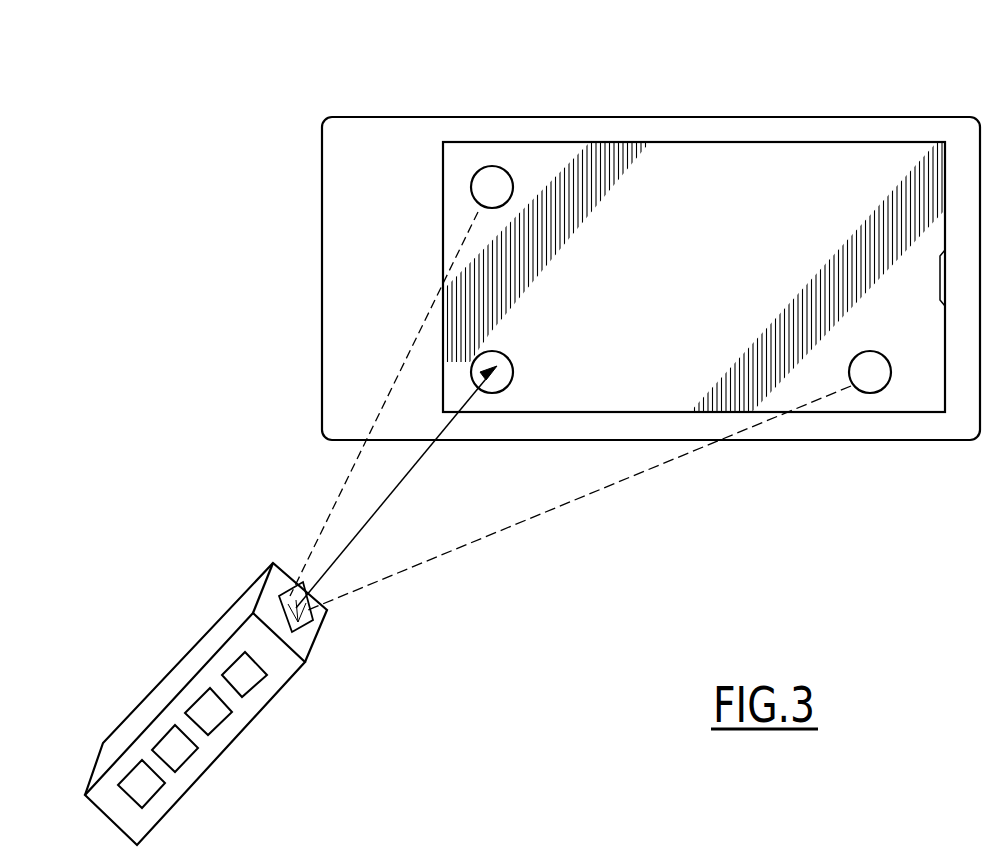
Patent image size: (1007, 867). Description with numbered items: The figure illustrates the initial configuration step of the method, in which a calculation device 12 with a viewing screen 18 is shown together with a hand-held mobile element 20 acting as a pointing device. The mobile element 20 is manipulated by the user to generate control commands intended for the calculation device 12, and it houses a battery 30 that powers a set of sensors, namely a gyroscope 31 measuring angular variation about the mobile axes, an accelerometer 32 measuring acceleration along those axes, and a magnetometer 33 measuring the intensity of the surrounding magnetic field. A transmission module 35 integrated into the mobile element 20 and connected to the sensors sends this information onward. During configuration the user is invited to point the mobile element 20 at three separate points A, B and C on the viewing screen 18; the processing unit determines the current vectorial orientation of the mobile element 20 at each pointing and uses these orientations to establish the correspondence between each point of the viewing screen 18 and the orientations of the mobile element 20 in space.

The calculation device 12 is at (775, 116).
The viewing screen 18 is at (843, 412).
The mobile element 20 is at (216, 714).
The battery 30 is at (150, 790).
The gyroscope 31 is at (180, 760).
The accelerometer 32 is at (218, 722).
The magnetometer 33 is at (248, 682).
The transmission module 35 is at (320, 637).